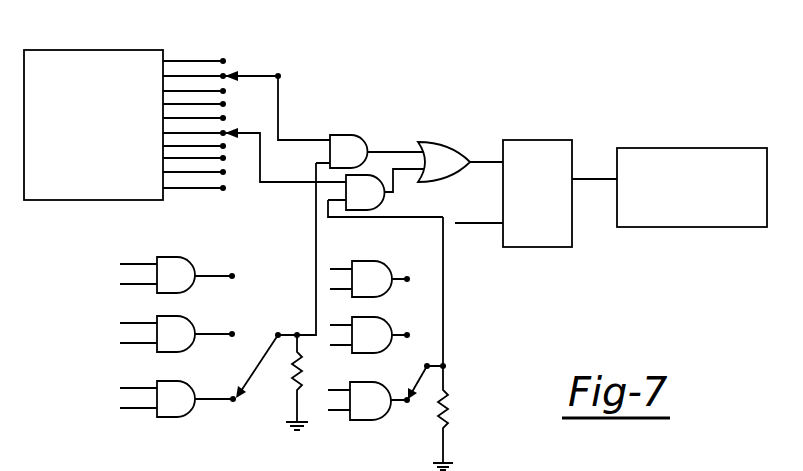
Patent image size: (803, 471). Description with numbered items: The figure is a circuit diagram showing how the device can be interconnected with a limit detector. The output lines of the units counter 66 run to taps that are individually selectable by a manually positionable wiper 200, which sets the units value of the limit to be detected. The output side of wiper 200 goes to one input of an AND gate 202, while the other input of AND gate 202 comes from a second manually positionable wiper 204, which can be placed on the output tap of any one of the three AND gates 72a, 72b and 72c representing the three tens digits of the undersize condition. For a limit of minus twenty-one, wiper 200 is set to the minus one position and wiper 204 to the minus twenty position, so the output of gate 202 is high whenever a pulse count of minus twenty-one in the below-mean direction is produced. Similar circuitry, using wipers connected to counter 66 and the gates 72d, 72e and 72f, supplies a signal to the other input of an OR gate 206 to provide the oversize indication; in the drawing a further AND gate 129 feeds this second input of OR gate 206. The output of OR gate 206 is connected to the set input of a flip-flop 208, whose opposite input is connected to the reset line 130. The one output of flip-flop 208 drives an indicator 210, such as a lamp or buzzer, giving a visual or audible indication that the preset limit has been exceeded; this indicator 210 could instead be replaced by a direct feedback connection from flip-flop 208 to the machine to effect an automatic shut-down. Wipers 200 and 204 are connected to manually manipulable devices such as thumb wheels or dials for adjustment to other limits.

The units counter 66 is at (128, 30).
The manually positionable wiper 200 is at (262, 73).
The AND gate 202 is at (357, 121).
The AND gate 129 is at (385, 218).
The OR gate 206 is at (467, 113).
The flip-flop 208 is at (545, 140).
The indicator 210 is at (712, 128).
The reset line 130 is at (472, 228).
The AND gate 72a is at (190, 258).
The AND gate 72b is at (190, 317).
The AND gate 72c is at (183, 382).
The AND gate 72d is at (381, 262).
The AND gate 72e is at (378, 318).
The AND gate 72f is at (384, 365).
The manually positionable wiper 204 is at (265, 372).